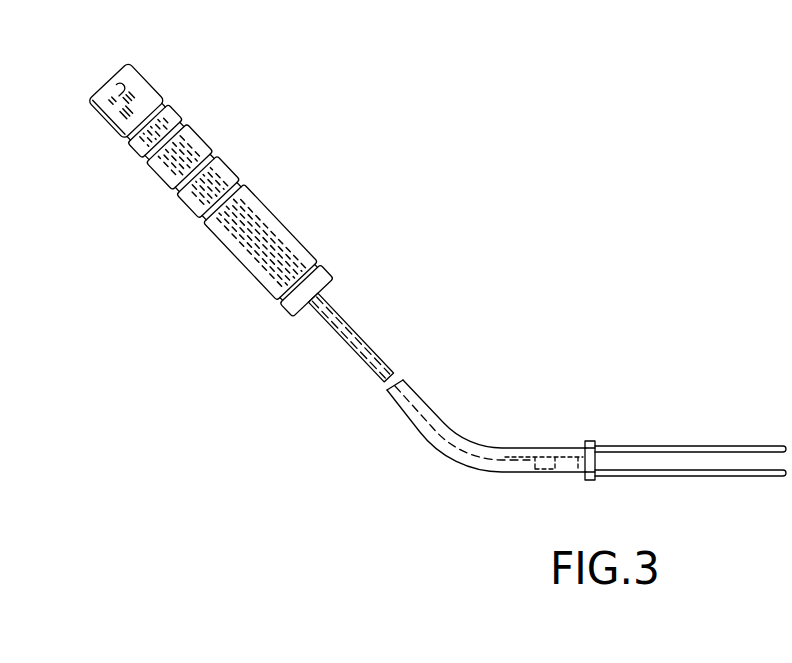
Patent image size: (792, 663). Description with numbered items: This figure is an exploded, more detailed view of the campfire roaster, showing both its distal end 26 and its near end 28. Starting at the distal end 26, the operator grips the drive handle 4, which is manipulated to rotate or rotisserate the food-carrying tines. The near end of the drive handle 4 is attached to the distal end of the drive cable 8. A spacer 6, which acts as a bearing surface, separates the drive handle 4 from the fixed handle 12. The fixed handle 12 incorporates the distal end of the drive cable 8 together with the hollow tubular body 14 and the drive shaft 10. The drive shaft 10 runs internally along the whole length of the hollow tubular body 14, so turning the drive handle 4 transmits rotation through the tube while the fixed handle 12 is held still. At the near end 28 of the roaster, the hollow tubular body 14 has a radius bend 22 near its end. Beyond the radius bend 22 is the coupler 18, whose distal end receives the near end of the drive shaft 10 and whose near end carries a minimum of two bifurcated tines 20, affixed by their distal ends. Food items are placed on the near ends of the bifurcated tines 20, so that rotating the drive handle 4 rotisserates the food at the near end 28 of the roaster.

The drive handle 4 is at (110, 80).
The spacer 6 is at (165, 103).
The distal end of the drive cable 8 is at (118, 129).
The drive cable 10 is at (343, 318).
The fixed handle 12 is at (226, 160).
The hollow tubular body 14 is at (347, 352).
The coupler 18 is at (583, 460).
The bifurcated tines 20 is at (720, 446).
The radius bend 22 is at (458, 457).
The distal end 26 is at (331, 210).
The near end 28 is at (437, 450).